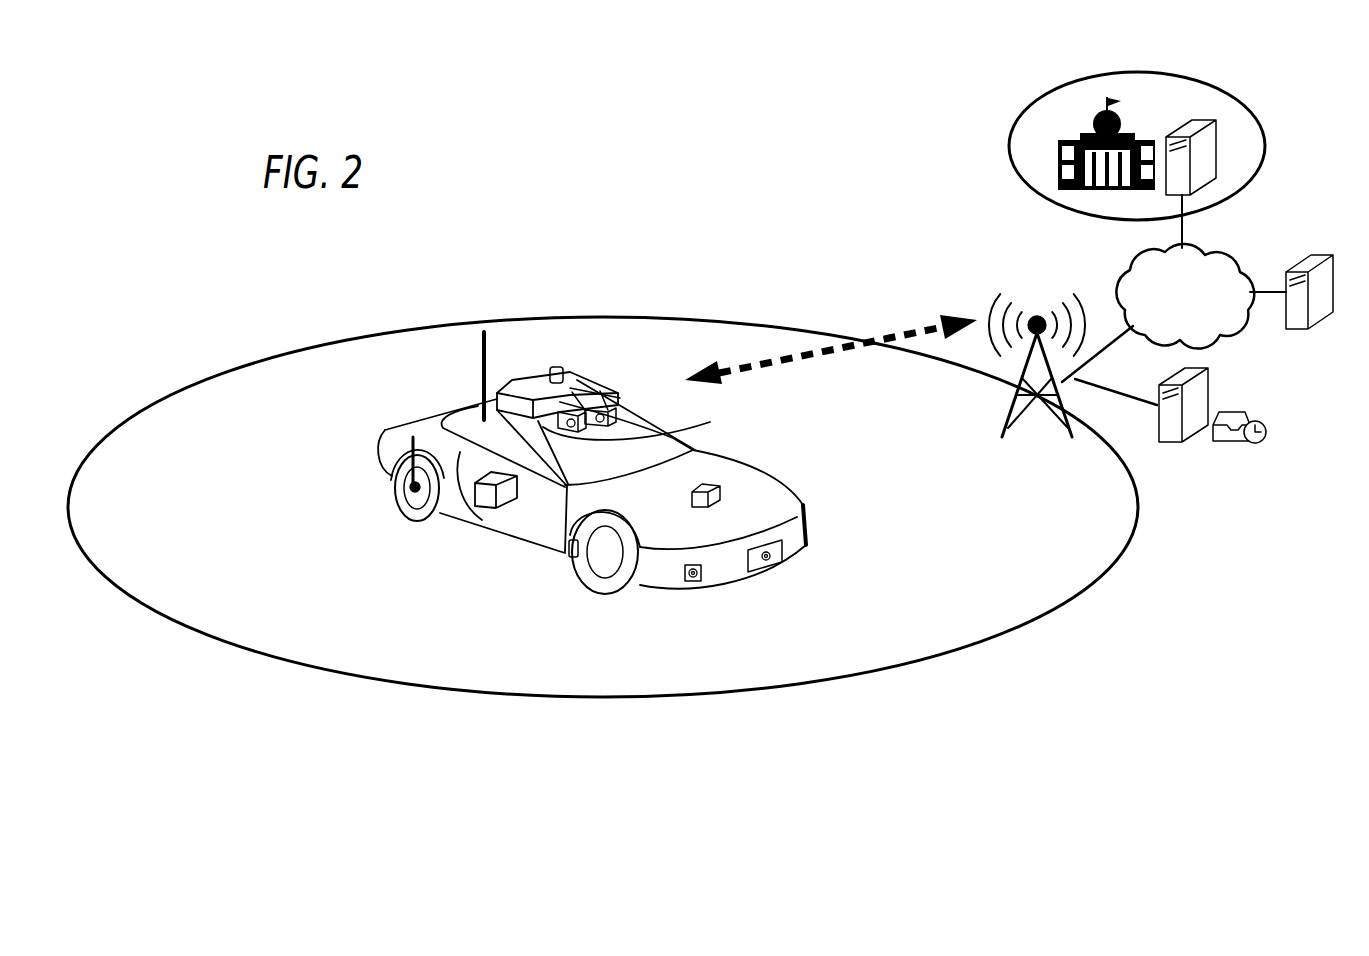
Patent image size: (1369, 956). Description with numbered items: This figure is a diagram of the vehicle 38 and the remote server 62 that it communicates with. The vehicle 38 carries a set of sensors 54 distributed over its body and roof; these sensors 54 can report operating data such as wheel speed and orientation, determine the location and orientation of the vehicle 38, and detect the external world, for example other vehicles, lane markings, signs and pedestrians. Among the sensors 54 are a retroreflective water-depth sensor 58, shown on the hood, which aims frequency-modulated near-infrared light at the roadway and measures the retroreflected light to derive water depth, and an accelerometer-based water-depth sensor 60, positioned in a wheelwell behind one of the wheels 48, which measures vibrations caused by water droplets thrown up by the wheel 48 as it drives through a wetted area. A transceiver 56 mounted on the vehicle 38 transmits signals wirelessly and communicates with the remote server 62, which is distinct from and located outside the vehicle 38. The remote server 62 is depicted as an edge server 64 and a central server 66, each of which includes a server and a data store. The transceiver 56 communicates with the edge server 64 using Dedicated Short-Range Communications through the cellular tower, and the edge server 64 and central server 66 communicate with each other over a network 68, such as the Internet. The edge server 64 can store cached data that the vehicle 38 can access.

The vehicle 38 is at (638, 356).
The wheels 48 is at (397, 500).
The sensors 54 is at (555, 365).
The transceiver 56 is at (484, 392).
The retroreflective water-depth sensor 58 is at (716, 490).
The accelerometer-based water-depth sensor 60 is at (570, 552).
The remote server 62 is at (924, 130).
The edge server 64 is at (1193, 446).
The central server 66 is at (1228, 88).
The network 68 is at (1236, 262).